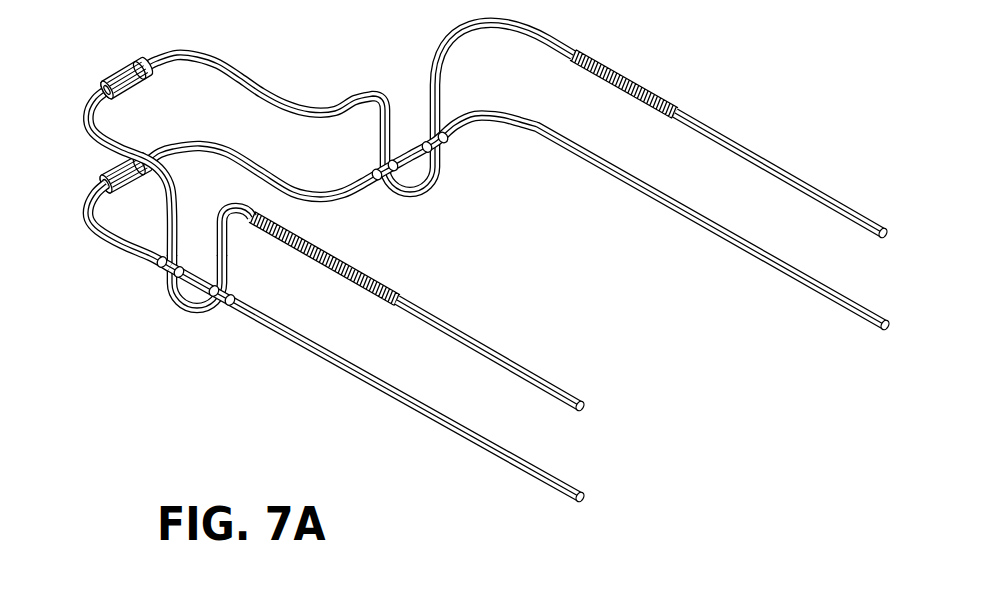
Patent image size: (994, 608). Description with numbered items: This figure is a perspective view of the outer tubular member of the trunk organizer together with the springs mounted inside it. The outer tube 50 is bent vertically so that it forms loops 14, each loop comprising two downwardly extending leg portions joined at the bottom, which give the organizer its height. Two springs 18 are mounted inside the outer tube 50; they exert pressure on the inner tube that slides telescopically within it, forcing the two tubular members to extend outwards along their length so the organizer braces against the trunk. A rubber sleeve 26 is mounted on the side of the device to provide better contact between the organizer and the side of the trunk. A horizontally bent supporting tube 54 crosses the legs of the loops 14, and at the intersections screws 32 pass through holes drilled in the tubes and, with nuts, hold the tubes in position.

The loop 14 is at (190, 314).
The spring 18 is at (601, 67).
The rubber sleeve 26 is at (124, 67).
The screw 32 is at (160, 268).
The outer tube 50 is at (743, 143).
The supporting tube 54 is at (437, 420).